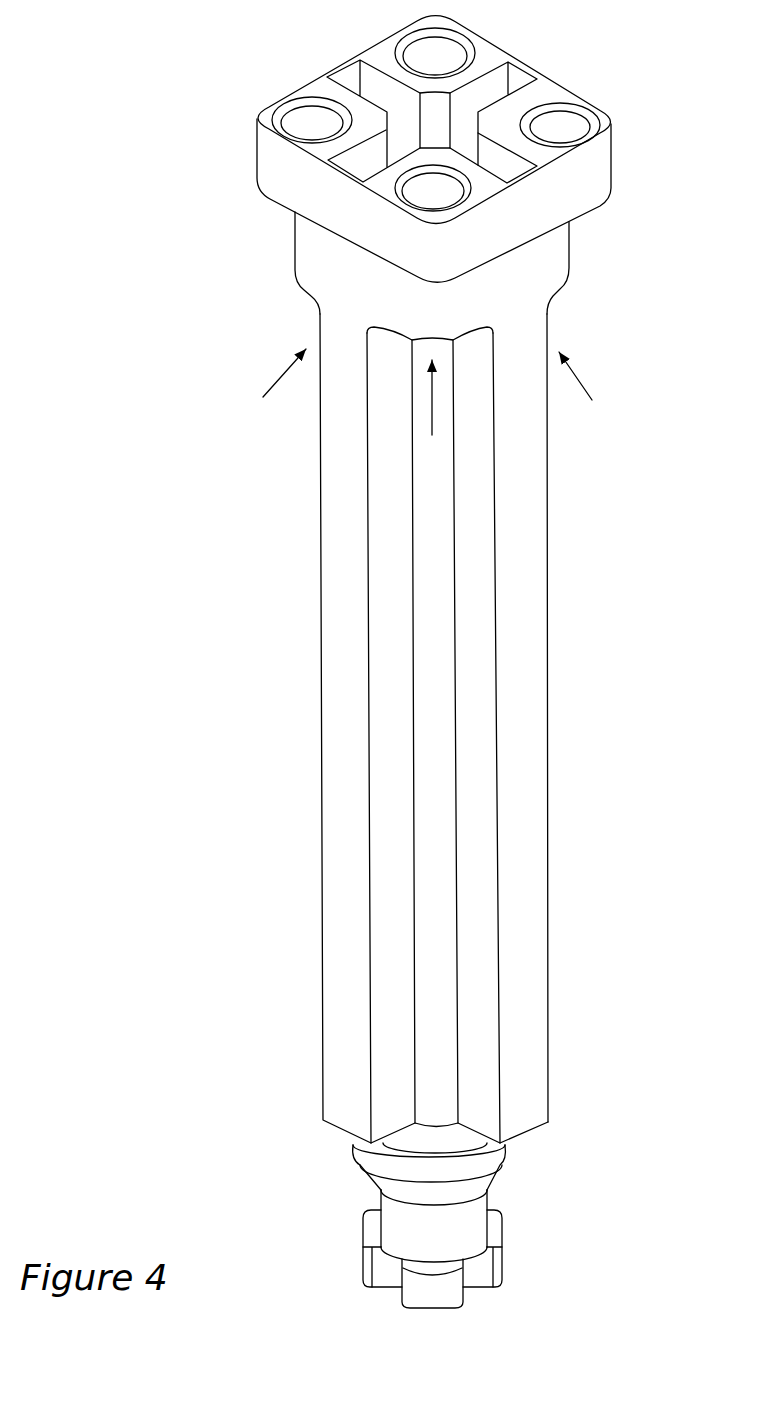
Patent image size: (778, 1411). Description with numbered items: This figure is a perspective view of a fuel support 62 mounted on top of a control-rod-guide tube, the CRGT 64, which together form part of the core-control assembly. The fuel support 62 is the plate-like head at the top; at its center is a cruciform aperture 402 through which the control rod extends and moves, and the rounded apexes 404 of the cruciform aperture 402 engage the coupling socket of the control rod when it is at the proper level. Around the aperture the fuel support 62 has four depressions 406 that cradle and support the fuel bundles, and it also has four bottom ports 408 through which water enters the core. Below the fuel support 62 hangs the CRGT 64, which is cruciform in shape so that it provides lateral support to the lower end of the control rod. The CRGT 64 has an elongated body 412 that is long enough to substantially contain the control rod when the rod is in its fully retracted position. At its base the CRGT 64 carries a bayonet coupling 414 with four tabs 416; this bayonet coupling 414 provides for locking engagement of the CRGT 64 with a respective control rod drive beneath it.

The fuel support 62 is at (231, 68).
The control-rod-guide tube (CRGT) 64 is at (412, 725).
The cruciform aperture 402 is at (518, 80).
The rounded apexes 404 is at (432, 115).
The depressions 406 is at (445, 193).
The bottom ports 408 is at (455, 385).
The elongated body 412 is at (548, 703).
The bayonet coupling 414 is at (512, 1216).
The tabs 416 is at (502, 1263).